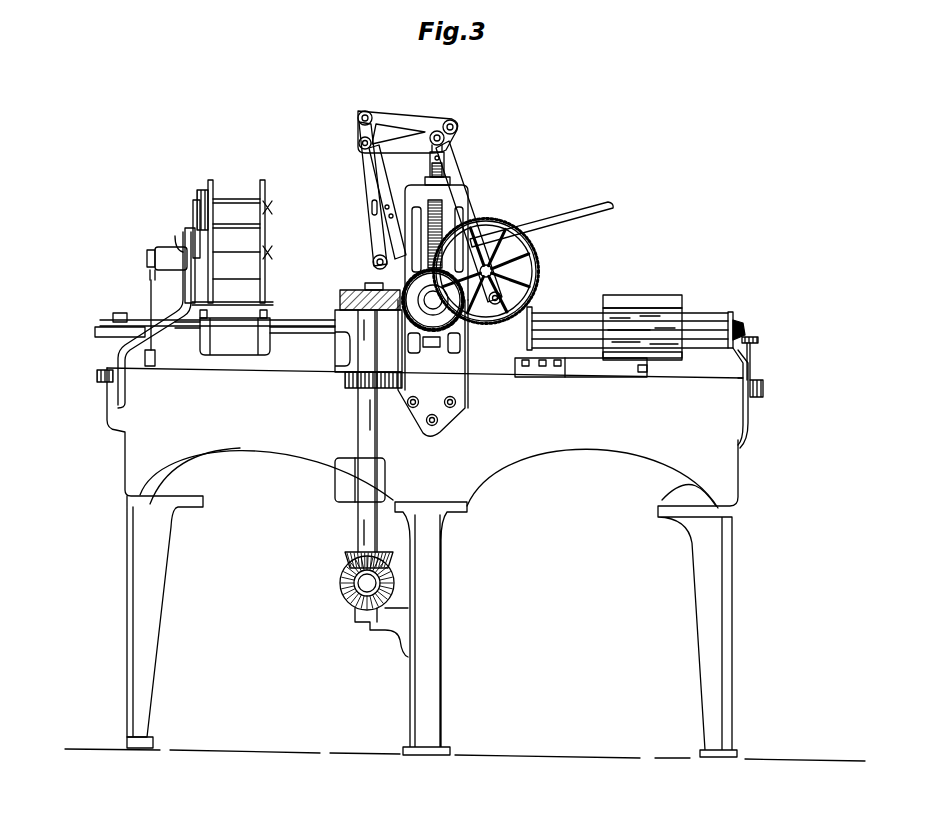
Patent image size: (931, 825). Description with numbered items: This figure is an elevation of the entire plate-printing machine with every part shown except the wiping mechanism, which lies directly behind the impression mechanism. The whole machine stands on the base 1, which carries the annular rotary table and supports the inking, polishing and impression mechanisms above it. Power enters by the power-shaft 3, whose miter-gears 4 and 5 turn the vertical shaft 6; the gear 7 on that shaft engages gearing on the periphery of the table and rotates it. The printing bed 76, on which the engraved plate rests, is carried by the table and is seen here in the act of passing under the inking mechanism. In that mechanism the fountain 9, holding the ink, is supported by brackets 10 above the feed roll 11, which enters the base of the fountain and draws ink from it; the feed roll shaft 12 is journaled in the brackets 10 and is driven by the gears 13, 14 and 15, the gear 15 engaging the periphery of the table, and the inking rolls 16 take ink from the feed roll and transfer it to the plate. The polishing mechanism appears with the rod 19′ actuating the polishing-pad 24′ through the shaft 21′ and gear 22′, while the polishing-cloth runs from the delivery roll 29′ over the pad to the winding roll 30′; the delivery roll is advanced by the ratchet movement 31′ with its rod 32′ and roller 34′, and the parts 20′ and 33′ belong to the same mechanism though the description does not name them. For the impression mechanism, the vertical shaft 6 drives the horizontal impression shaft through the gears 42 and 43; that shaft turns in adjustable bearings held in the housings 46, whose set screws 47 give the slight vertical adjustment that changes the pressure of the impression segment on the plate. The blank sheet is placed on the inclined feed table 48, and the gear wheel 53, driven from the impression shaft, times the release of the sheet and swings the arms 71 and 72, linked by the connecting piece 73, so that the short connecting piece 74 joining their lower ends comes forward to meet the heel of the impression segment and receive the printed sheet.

The base 1 is at (612, 445).
The power-shaft 3 is at (344, 598).
The miter-gear 4 is at (343, 582).
The miter-gear 5 is at (343, 552).
The vertical shaft 6 is at (360, 528).
The gear 7 is at (350, 384).
The fountain 9 is at (668, 302).
The brackets 10 is at (733, 310).
The feed roll 11 is at (620, 300).
The feed roll shaft 12 is at (690, 320).
The gear 13 is at (745, 328).
The gear 14 is at (760, 340).
The gear 15 is at (766, 387).
The inking rolls 16 is at (683, 356).
The rod 19′ is at (292, 333).
The bar 20′ is at (100, 322).
The shaft 21′ is at (112, 340).
The gear 22′ is at (97, 375).
The polishing-pad 24′ is at (258, 352).
The delivery roll 29′ is at (266, 270).
The winding roll 30′ is at (265, 188).
The ratchet movement 31′ is at (148, 253).
The rod 32′ is at (150, 300).
The lever 33′ is at (175, 285).
The roller 34′ is at (155, 360).
The gear 42 is at (340, 297).
The gear 43 is at (445, 318).
The housings 46 is at (462, 196).
The set screws 47 is at (445, 157).
The inclined feed table 48 is at (570, 218).
The gear wheel 53 is at (541, 264).
The arm 71 is at (366, 196).
The arm 72 is at (372, 208).
The connecting piece 73 is at (437, 118).
The short connecting piece 74 is at (374, 261).
The printing bed 76 is at (592, 378).